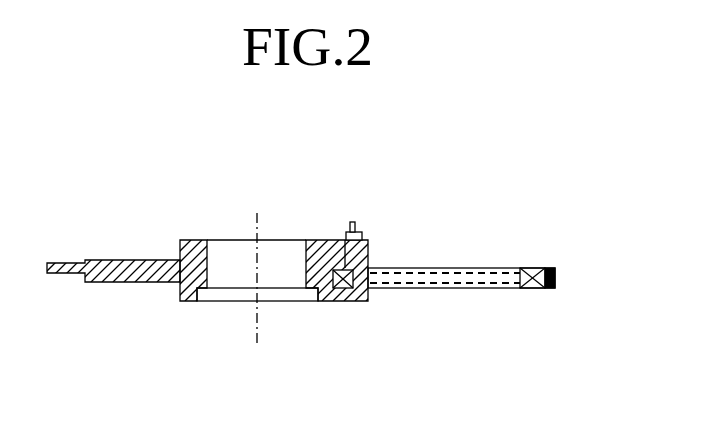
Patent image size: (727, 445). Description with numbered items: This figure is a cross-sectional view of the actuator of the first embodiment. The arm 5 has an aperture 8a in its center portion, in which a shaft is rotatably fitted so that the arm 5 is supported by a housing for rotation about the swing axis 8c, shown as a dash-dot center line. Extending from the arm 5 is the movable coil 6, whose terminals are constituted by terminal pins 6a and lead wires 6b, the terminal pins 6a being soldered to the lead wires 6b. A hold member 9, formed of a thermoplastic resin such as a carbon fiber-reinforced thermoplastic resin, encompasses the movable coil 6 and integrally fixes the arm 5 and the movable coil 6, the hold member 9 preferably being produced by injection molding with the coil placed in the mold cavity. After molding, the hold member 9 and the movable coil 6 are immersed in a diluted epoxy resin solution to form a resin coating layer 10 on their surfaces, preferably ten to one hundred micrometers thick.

The arm 5 is at (102, 261).
The movable coil 6 is at (532, 268).
The terminal pins 6a is at (352, 222).
The lead wires 6b is at (362, 250).
The aperture 8a is at (211, 266).
The swing axis 8c is at (258, 322).
The hold member 9 is at (553, 275).
The resin coating layer 10 is at (498, 288).